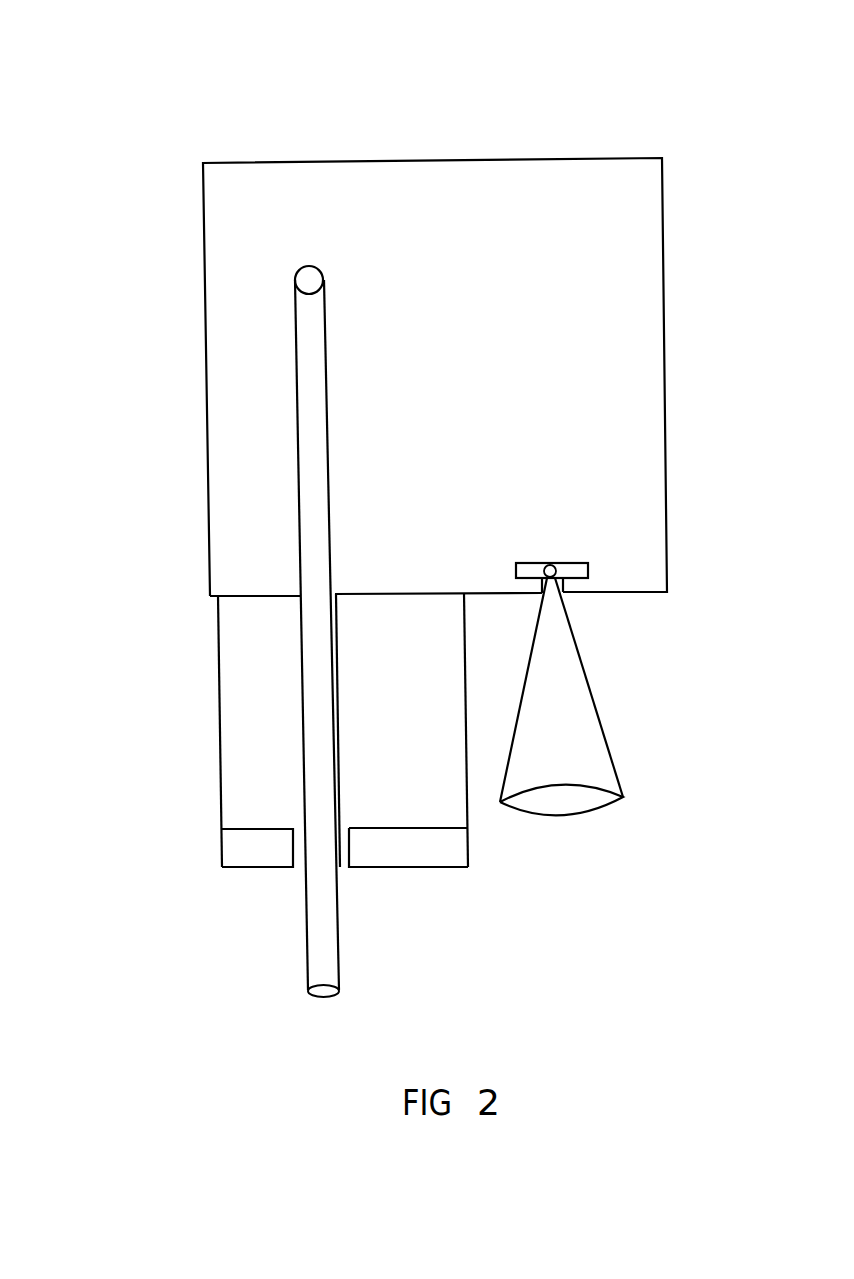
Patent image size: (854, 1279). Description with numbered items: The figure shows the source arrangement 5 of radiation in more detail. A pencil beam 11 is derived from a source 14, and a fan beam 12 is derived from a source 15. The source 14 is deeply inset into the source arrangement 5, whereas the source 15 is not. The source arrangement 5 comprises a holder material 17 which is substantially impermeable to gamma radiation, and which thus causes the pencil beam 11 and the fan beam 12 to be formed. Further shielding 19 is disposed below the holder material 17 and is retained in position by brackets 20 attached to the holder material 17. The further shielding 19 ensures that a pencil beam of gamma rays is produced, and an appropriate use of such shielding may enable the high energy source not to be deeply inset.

The source arrangement 5 is at (385, 525).
The holder material 17 is at (462, 178).
The source 14 is at (300, 279).
The pencil beam 11 is at (186, 619).
The source 15 is at (556, 566).
The fan beam 12 is at (570, 697).
The brackets 20 is at (217, 765).
The further shielding 19 is at (250, 857).